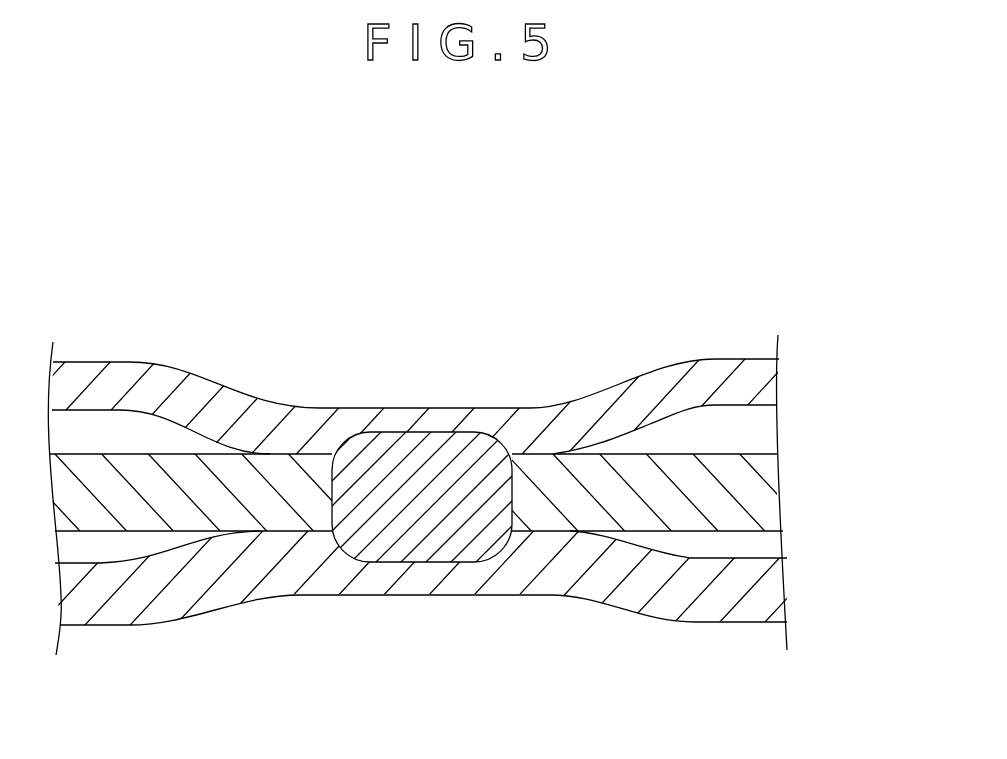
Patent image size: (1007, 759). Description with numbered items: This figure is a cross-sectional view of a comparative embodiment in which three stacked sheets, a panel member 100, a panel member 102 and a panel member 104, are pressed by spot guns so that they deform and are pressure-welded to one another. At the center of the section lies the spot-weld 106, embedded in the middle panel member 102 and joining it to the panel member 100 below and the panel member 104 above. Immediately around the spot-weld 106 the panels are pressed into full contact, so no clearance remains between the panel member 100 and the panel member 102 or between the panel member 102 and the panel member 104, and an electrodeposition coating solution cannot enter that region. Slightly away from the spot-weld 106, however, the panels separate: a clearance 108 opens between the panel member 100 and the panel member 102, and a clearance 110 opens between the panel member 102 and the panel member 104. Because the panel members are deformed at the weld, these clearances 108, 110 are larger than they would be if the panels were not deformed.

The panel member 100 is at (773, 587).
The panel member 102 is at (758, 485).
The panel member 104 is at (758, 385).
The spot-weld 106 is at (400, 458).
The clearance 108 is at (733, 542).
The clearance 110 is at (707, 425).